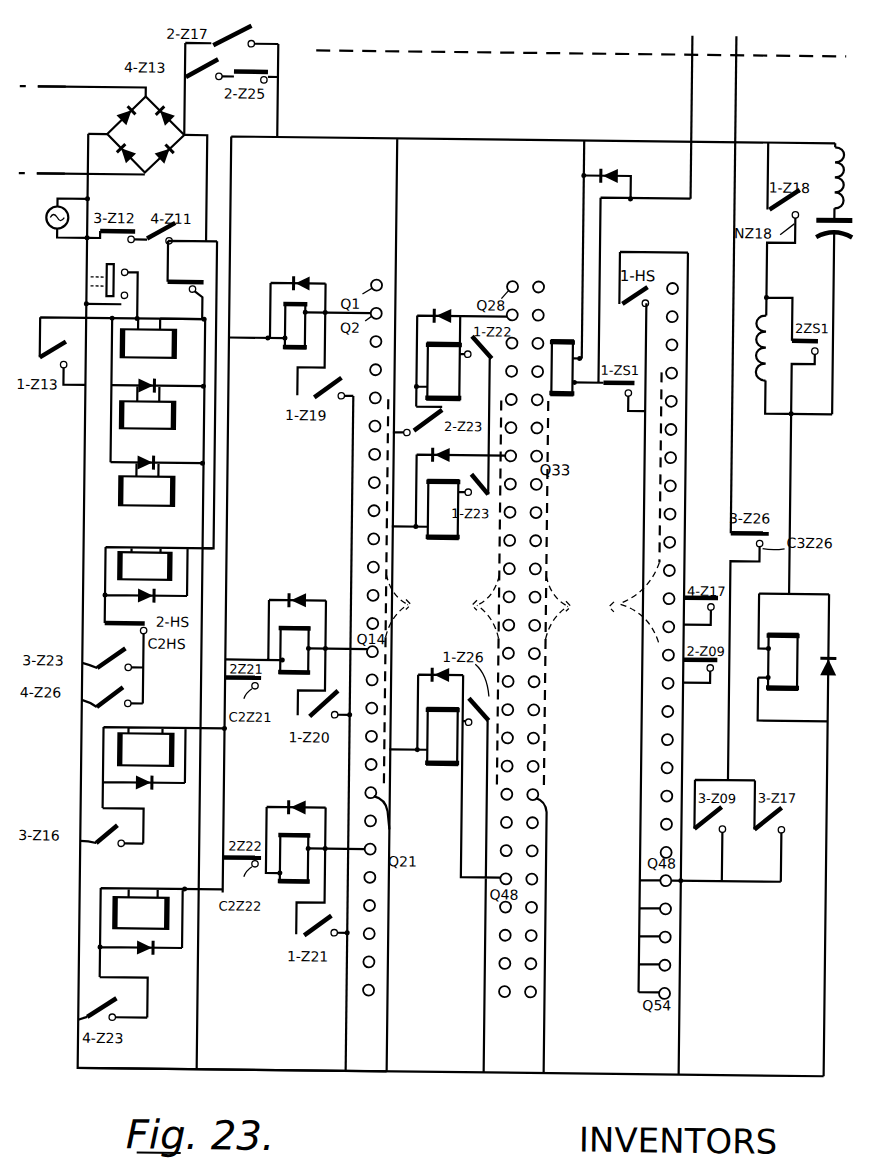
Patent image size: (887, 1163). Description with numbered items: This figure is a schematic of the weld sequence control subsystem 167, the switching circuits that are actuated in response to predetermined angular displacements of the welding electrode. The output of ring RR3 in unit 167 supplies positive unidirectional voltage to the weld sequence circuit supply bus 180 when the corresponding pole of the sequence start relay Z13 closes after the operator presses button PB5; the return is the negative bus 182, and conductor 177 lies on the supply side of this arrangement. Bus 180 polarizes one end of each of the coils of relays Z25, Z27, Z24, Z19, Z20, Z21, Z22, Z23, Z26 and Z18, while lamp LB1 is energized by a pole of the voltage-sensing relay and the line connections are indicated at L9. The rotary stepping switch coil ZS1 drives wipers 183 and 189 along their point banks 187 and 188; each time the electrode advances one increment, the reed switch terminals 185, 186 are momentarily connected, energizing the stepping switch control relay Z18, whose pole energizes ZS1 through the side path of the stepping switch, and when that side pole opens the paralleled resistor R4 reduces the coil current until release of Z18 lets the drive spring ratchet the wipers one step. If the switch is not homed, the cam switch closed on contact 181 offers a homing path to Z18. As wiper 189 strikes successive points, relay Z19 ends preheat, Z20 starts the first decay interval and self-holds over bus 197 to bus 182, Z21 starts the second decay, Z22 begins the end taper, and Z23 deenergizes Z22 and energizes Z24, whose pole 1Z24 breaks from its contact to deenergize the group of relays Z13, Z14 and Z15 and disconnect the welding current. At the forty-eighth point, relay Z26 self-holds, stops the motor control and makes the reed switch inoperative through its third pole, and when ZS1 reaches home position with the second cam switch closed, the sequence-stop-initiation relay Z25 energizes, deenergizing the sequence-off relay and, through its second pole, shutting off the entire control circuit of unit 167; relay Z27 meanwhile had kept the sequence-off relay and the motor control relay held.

The weld sequence control subsystem 167 is at (425, 58).
The rectifier output conductor 177 is at (204, 203).
The weld sequence circuit supply bus 180 is at (325, 140).
The contact 181 is at (649, 663).
The negative bus 182 is at (234, 1076).
The wiper 183 is at (551, 834).
The reed switch terminal 185 is at (687, 121).
The reed switch terminal 186 is at (731, 128).
The point bank 187 is at (603, 601).
The point bank 188 is at (413, 605).
The wiper 189 is at (388, 844).
The bus 197 is at (348, 990).
The ring RR3 is at (146, 134).
The power line terminals L9 is at (51, 129).
The lamp LB1 is at (54, 218).
The button PB5 is at (86, 290).
The pole of relay Z24 1Z24 is at (187, 395).
The sequence start relay Z13 is at (148, 338).
The relay Z14 is at (158, 403).
The relay Z15 is at (157, 480).
The sequence-stop-initiation relay Z25 is at (157, 585).
The relay Z27 is at (153, 785).
The relay Z24 is at (150, 953).
The relay Z19 is at (299, 337).
The relay Z20 is at (279, 629).
The relay Z21 is at (279, 836).
The relay Z22 is at (427, 343).
The relay Z23 is at (430, 534).
The relay Z26 is at (427, 765).
The stepping switch control relay Z18 is at (620, 292).
The resistor R4 is at (751, 347).
The rotary stepping switch coil ZS1 is at (795, 835).